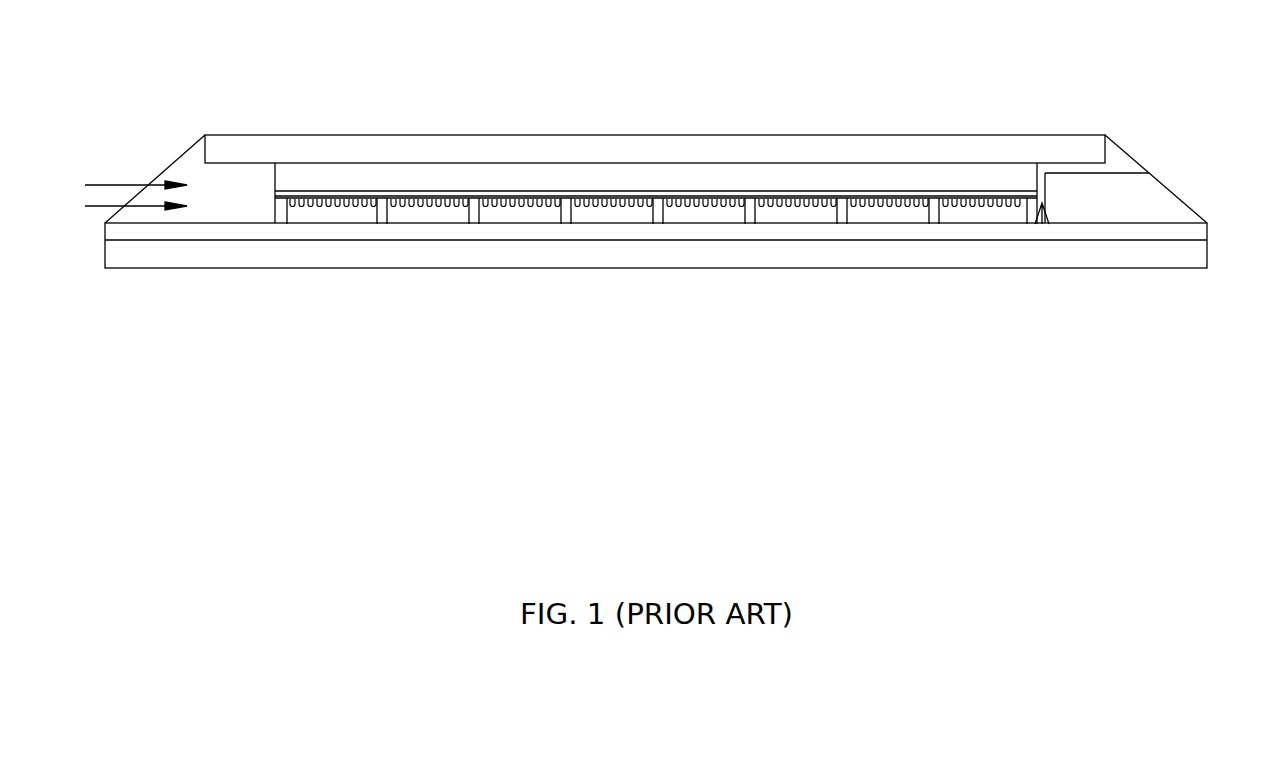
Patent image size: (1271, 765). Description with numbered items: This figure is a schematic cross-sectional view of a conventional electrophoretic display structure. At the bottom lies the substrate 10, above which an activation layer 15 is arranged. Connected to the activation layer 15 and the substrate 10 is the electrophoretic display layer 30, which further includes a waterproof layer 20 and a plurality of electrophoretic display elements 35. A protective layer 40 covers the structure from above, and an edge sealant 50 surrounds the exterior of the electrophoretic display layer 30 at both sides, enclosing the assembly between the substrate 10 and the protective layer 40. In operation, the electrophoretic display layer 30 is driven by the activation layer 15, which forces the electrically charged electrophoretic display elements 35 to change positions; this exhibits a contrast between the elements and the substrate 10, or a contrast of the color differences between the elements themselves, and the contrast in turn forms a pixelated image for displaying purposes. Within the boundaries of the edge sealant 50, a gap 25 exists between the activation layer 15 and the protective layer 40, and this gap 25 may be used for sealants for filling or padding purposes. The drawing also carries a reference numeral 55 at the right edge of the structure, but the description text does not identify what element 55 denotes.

The substrate 10 is at (412, 248).
The activation layer 15 is at (313, 230).
The waterproof layer 20 is at (855, 195).
The gap 25 is at (1043, 226).
The electrophoretic display layer 30 is at (873, 63).
The electrophoretic display elements 35 is at (708, 198).
The protective layer 40 is at (470, 133).
The edge sealant 50 is at (190, 163).
The sealant layer 55 is at (1135, 172).